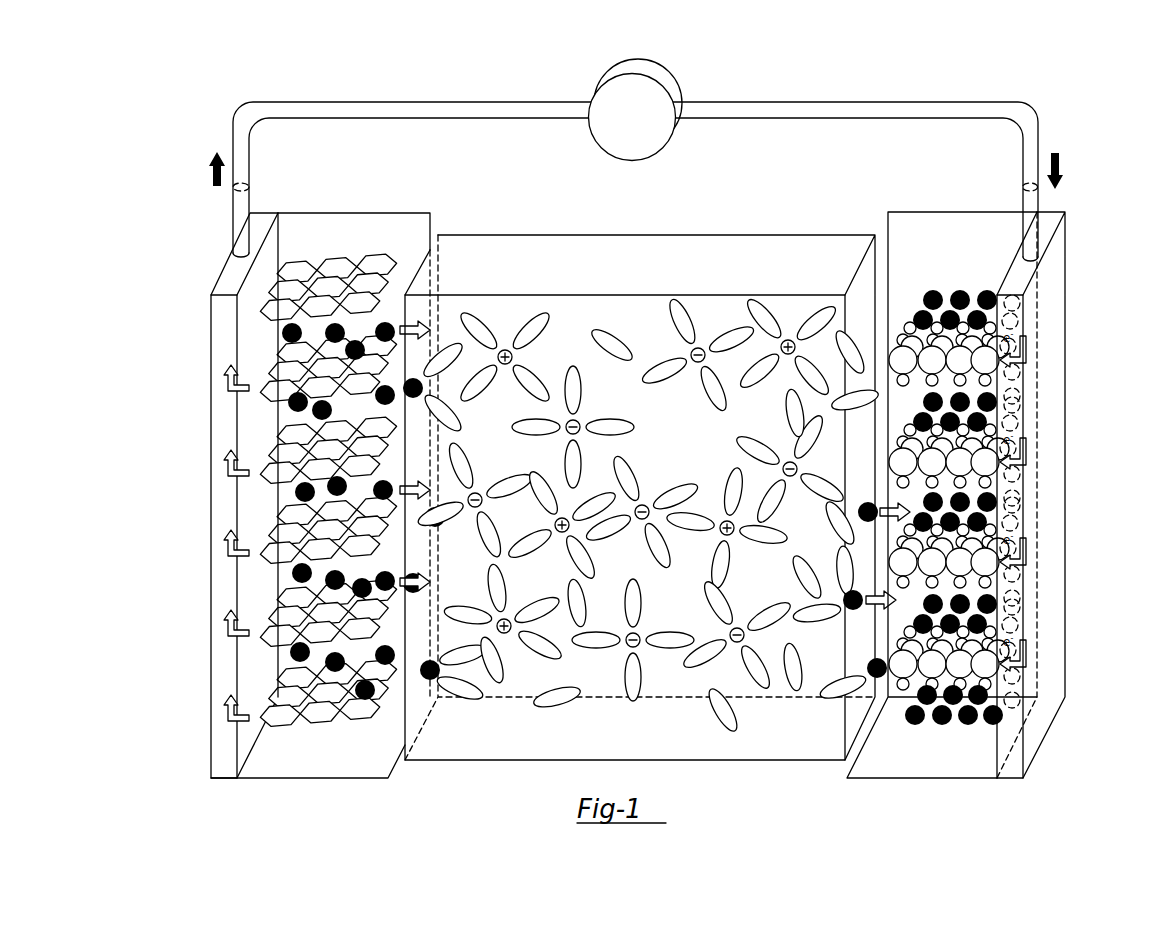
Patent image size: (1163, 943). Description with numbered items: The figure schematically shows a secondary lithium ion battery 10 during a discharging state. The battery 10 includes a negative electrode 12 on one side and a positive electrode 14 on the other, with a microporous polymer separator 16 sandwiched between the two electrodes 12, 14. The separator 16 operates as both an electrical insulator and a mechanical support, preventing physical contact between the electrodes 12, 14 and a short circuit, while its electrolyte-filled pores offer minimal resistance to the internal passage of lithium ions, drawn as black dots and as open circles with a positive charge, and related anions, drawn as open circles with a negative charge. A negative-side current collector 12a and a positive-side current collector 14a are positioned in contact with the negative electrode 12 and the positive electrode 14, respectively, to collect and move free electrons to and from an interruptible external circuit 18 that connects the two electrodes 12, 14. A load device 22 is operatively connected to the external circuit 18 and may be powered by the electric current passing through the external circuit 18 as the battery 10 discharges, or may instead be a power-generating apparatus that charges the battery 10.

The lithium ion battery 10 is at (1066, 114).
The negative electrode 12 is at (302, 748).
The negative-side current collector 12a is at (215, 752).
The positive electrode 14 is at (910, 738).
The positive-side current collector 14a is at (1010, 770).
The microporous polymer separator 16 is at (425, 762).
The external circuit 18 is at (479, 102).
The load device 22 is at (676, 79).